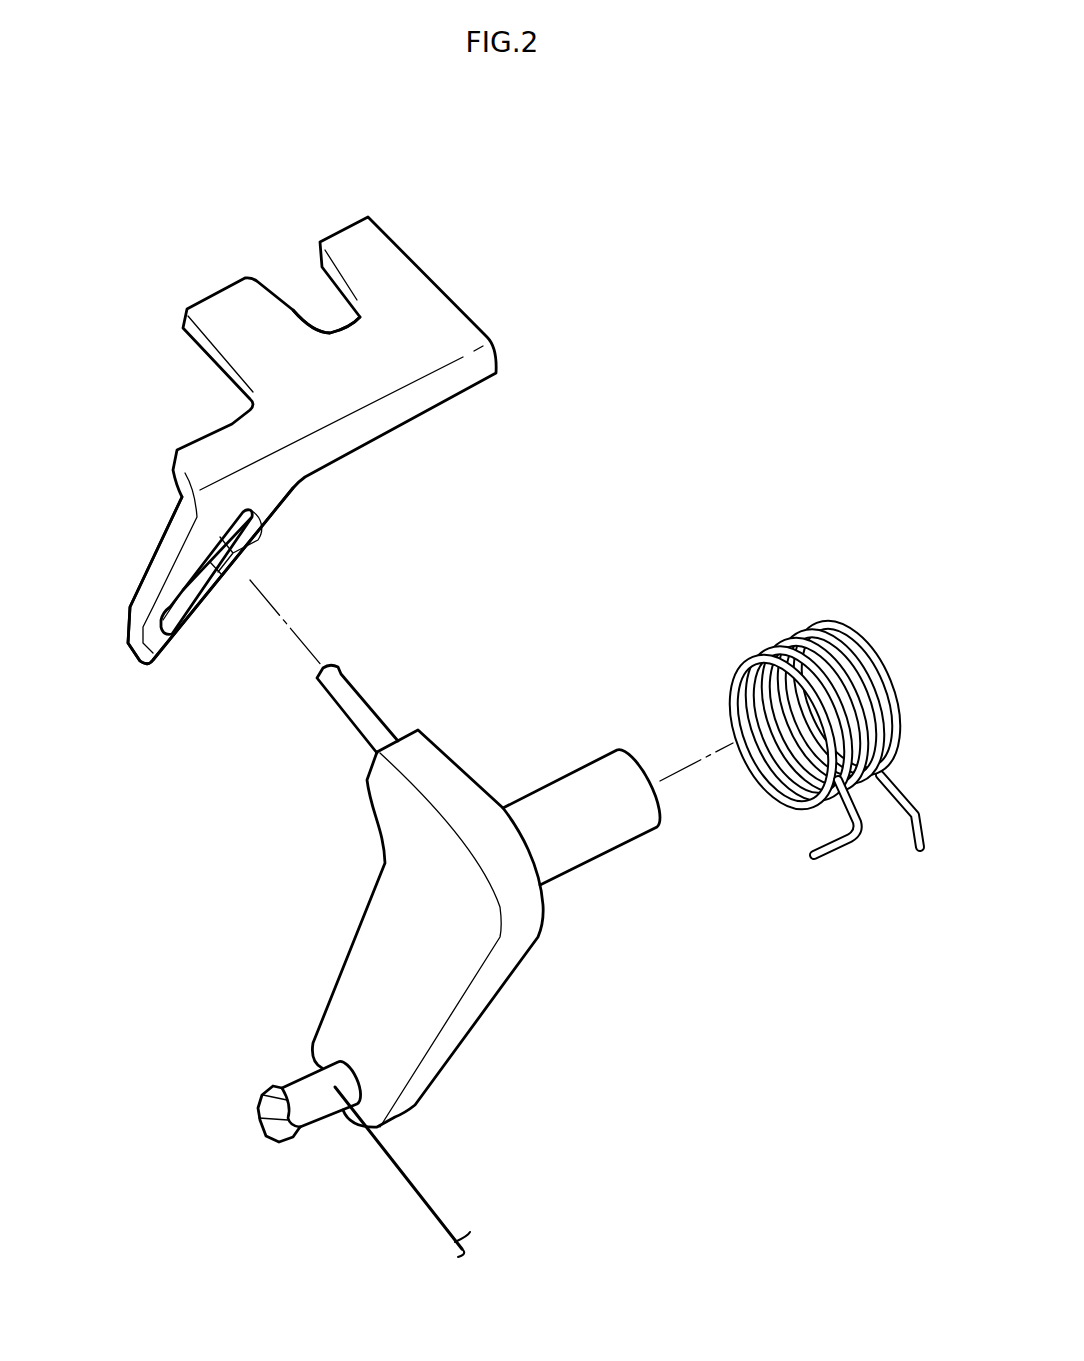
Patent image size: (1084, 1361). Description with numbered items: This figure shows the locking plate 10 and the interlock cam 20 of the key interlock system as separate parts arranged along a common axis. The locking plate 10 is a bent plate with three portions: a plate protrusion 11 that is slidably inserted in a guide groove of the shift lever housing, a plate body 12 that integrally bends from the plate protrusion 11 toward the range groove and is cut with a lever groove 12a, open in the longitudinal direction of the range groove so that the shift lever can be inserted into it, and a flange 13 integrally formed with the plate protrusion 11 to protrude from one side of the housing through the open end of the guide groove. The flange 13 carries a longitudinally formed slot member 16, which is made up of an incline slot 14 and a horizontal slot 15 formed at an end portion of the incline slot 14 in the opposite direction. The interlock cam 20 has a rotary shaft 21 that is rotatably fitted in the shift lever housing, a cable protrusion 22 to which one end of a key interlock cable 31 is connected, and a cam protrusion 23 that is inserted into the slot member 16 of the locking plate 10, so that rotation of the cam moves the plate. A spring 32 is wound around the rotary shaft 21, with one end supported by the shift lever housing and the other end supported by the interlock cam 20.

The locking plate 10 is at (447, 266).
The plate protrusion 11 is at (445, 393).
The plate body 12 is at (209, 352).
The lever groove 12a is at (333, 284).
The flange 13 is at (155, 571).
The incline slot 14 is at (233, 592).
The horizontal slot 15 is at (262, 531).
The slot member 16 is at (207, 583).
The interlock cam 20 is at (337, 934).
The rotary shaft 21 is at (563, 790).
The cable protrusion 22 is at (303, 1085).
The cam protrusion 23 is at (360, 697).
The key interlock cable 31 is at (413, 1192).
The spring 32 is at (787, 640).